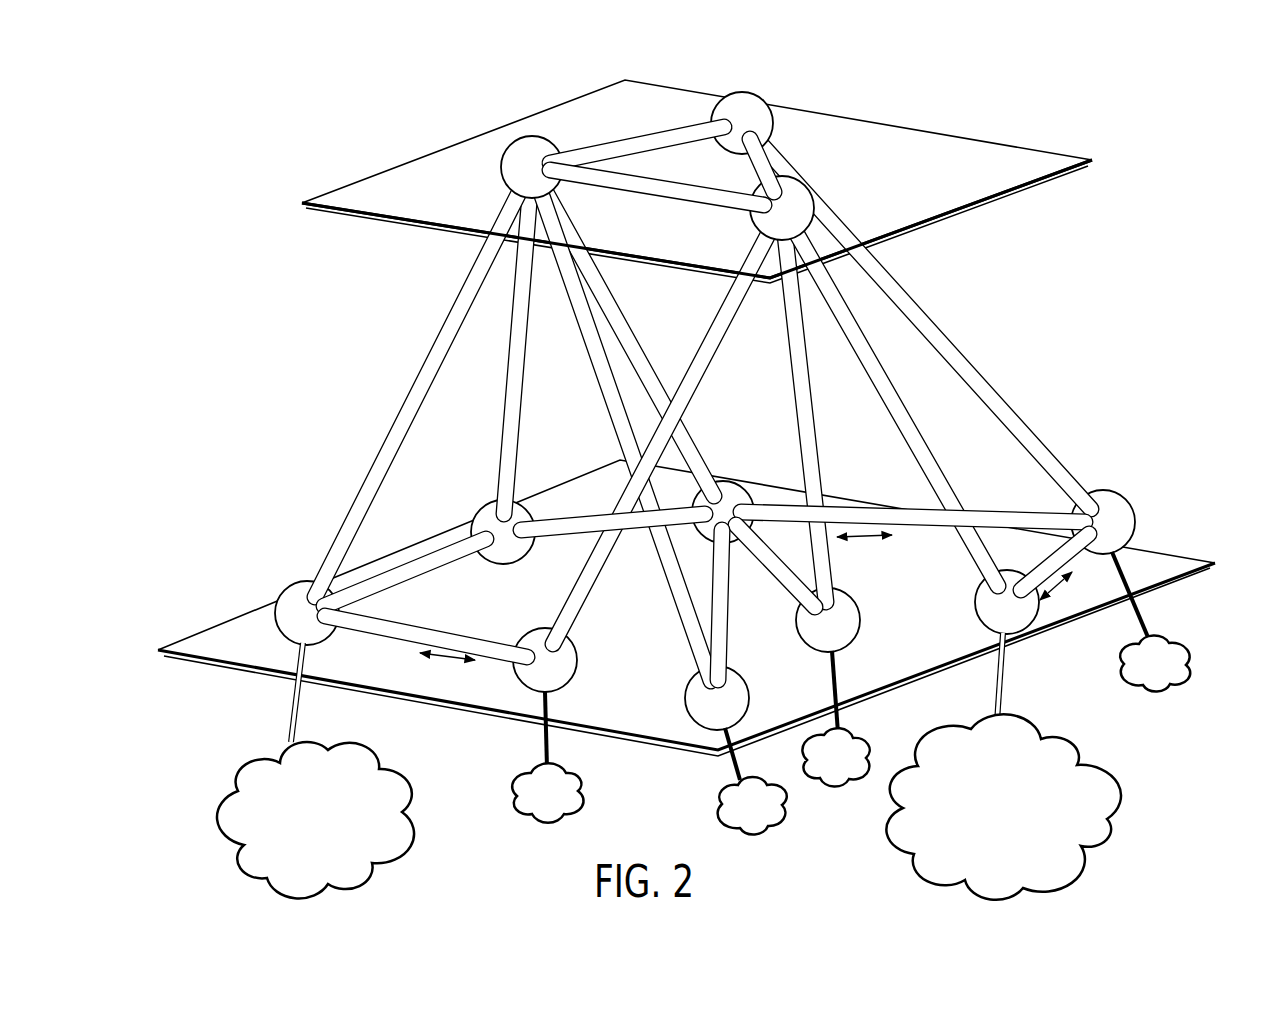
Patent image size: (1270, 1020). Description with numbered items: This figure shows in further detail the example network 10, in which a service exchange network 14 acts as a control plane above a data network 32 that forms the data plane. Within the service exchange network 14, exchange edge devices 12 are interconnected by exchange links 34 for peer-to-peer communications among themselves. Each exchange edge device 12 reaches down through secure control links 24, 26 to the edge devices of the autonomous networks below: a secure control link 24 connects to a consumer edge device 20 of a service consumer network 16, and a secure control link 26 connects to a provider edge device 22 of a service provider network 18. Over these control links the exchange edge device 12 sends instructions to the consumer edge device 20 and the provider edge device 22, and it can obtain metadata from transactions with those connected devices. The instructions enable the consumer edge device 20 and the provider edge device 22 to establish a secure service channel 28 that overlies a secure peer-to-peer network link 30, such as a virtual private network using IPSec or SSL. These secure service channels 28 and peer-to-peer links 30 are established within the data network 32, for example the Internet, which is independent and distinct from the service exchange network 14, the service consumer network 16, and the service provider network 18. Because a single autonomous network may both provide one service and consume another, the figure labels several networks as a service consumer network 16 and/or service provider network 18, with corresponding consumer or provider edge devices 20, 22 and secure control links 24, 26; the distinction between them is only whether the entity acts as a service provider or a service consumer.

The network 10 is at (272, 378).
The exchange edge device 12 is at (527, 137).
The service exchange network 14 is at (985, 185).
The service consumer network 16 is at (583, 787).
The service provider network 18 is at (410, 855).
The consumer edge device 20 is at (475, 515).
The provider edge device 22 is at (296, 583).
The secure control link 24 is at (632, 350).
The secure control link 26 is at (340, 522).
The secure service channel 28 is at (572, 493).
The secure peer-to-peer network link 30 is at (447, 663).
The data network 32 is at (192, 660).
The exchange link 34 is at (633, 135).